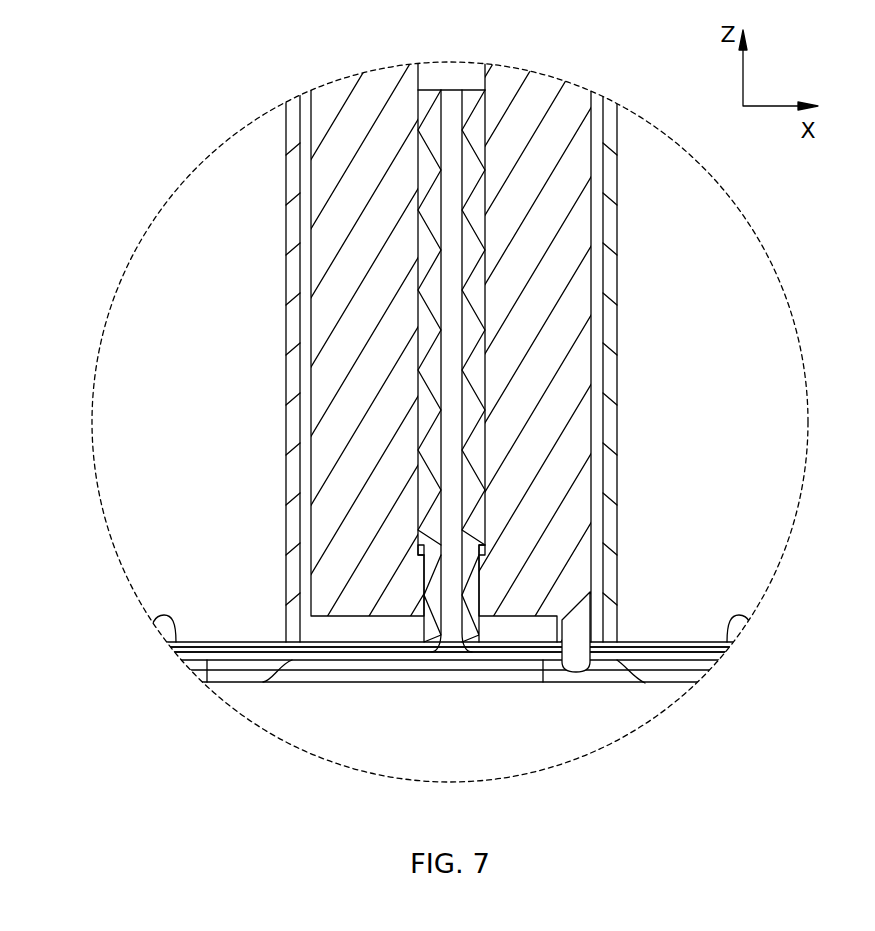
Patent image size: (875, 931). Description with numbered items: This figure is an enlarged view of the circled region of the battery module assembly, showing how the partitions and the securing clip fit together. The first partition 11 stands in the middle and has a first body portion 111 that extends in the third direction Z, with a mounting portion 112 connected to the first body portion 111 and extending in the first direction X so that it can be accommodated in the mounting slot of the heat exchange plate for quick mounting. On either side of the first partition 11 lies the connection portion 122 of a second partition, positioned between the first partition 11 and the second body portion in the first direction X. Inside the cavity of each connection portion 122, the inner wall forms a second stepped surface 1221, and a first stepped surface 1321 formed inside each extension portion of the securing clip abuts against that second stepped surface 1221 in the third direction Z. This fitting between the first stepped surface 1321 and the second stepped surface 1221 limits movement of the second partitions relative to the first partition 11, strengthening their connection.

The first partition 11 is at (451, 690).
The first body portion 111 is at (455, 567).
The mounting portion 112 is at (408, 651).
The connection portion 122 is at (427, 200).
The second stepped surface 1221 is at (419, 546).
The first stepped surface 1321 is at (424, 551).